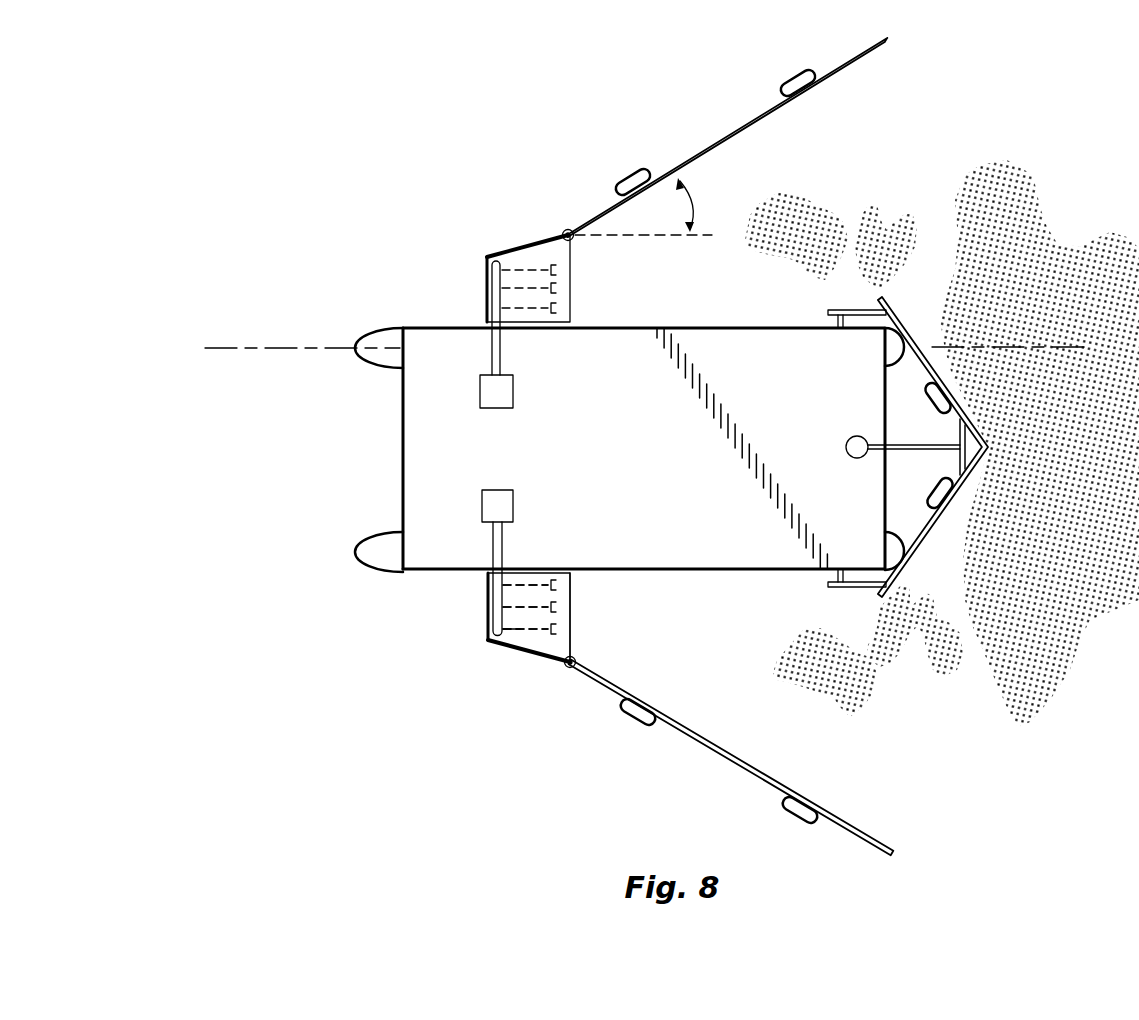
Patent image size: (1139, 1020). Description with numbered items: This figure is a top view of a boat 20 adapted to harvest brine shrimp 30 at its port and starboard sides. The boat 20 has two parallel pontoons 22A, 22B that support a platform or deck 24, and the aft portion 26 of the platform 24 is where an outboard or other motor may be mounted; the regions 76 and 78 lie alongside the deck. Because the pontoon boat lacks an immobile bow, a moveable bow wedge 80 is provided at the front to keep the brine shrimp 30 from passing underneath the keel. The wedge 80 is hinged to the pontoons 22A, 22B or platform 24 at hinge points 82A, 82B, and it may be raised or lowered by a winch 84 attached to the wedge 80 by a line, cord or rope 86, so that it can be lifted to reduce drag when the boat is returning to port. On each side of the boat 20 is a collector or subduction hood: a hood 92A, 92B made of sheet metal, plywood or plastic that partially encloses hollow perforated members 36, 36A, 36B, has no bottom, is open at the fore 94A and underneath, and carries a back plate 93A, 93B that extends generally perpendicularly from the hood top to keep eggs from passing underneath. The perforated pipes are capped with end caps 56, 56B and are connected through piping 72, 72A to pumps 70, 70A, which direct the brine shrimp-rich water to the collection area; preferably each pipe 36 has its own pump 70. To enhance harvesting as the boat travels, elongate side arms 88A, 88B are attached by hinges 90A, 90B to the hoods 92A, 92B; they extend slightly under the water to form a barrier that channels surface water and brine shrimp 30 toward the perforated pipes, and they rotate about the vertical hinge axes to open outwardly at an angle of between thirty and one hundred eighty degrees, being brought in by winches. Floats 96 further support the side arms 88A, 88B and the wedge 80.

The boat 20 is at (320, 697).
The pontoon 22A is at (373, 330).
The pontoon 22B is at (367, 533).
The platform or deck 24 is at (645, 530).
The aft portion 26 is at (400, 400).
The brine shrimp 30 is at (805, 208).
The perforated pipe 36 is at (528, 633).
The perforated pipe 36A is at (523, 613).
The perforated pipe 36B is at (532, 587).
The end cap 56 is at (555, 630).
The end cap 56B is at (552, 583).
The pump 70 is at (480, 503).
The pump 70A is at (503, 393).
The piping 72 is at (492, 548).
The piping 72A is at (503, 352).
The port side region 76 is at (647, 290).
The starboard side region 78 is at (689, 647).
The bow wedge 80 is at (933, 524).
The hinge point 82A is at (828, 312).
The hinge point 82B is at (832, 583).
The winch 84 is at (852, 438).
The line, cord or rope 86 is at (918, 443).
The side arm 88A is at (705, 145).
The side arm 88B is at (728, 752).
The hinge 90A is at (564, 230).
The hinge 90B is at (568, 670).
The hood 92A is at (520, 250).
The hood 92B is at (530, 655).
The back plate 93A is at (485, 290).
The back plate 93B is at (480, 645).
The fore 94A is at (577, 648).
The float 96 is at (780, 92).